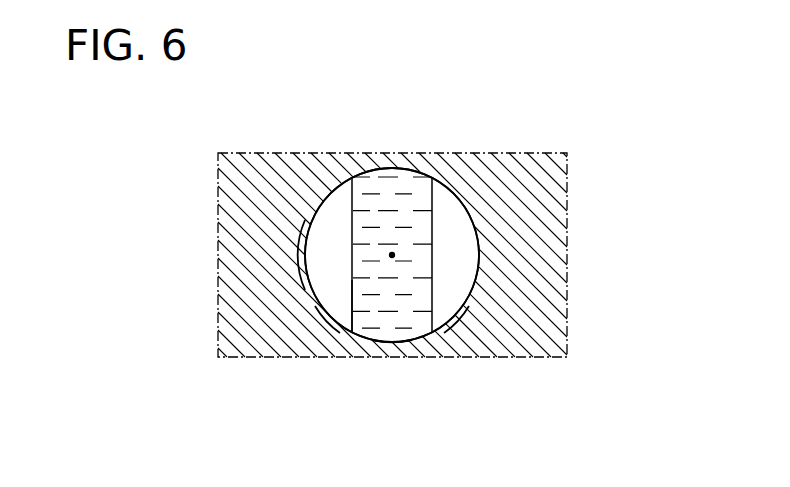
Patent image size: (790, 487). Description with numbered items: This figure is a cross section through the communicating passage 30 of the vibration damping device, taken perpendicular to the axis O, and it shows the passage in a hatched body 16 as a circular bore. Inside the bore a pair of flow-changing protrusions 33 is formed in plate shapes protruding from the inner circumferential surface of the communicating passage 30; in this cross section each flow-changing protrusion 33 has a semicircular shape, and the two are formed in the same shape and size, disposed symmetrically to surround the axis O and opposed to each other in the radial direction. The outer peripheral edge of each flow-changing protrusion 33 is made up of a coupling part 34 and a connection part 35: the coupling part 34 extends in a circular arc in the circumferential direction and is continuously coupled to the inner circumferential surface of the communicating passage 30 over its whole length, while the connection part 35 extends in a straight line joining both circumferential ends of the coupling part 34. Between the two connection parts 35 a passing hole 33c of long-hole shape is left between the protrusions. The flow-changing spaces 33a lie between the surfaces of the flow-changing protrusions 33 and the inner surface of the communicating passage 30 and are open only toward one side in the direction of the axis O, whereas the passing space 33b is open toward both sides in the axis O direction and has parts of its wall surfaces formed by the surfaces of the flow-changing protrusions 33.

The housing 16 is at (568, 210).
The communicating passage 30 is at (478, 255).
The flow-changing protrusion 33 is at (335, 213).
The flow-changing space 33a is at (328, 293).
The passing space 33b is at (400, 328).
The passing hole 33c is at (352, 301).
The coupling part 34 is at (305, 249).
The connection part 35 is at (354, 196).
The axis O is at (394, 253).